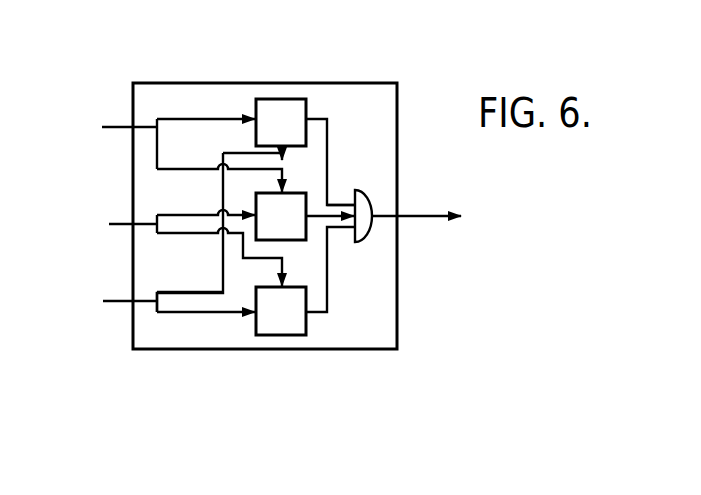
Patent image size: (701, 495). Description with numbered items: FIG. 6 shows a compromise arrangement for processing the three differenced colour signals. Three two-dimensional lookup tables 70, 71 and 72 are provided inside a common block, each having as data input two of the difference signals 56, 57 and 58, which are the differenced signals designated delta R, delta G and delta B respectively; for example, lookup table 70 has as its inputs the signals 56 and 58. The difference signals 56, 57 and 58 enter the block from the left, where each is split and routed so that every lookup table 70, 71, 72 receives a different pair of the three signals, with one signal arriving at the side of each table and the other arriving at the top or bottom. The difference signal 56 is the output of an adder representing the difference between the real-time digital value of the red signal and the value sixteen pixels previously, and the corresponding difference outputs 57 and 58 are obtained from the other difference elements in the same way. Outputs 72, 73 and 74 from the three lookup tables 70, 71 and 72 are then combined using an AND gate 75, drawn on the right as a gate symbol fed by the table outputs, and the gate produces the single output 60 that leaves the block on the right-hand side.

The difference signal 56 is at (113, 125).
The difference output 57 is at (110, 224).
The difference output 58 is at (115, 301).
The output 60 is at (433, 214).
The two-dimensional lookup table 70 is at (295, 99).
The two-dimensional lookup table 71 is at (298, 230).
The two-dimensional lookup table 72 is at (327, 127).
The lookup table output 73 is at (318, 205).
The lookup table output 74 is at (327, 312).
The AND gate 75 is at (371, 232).